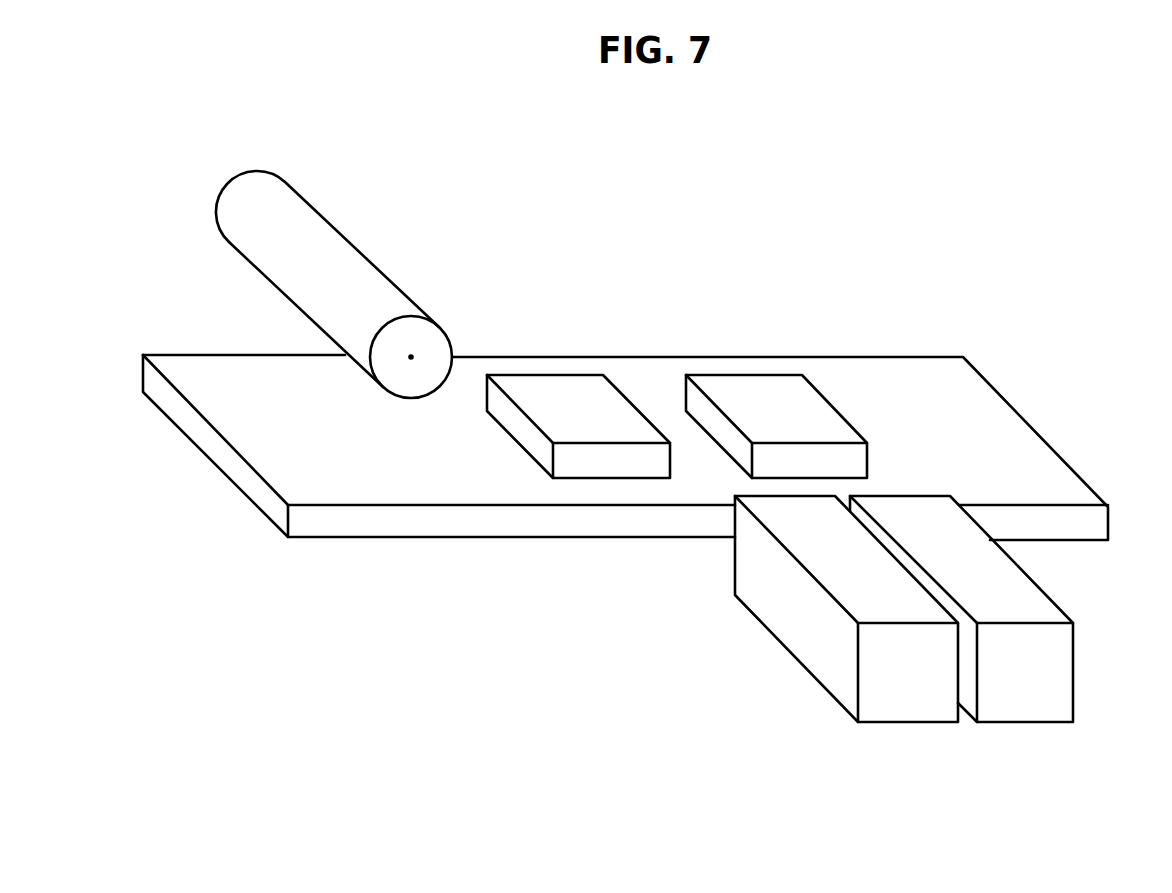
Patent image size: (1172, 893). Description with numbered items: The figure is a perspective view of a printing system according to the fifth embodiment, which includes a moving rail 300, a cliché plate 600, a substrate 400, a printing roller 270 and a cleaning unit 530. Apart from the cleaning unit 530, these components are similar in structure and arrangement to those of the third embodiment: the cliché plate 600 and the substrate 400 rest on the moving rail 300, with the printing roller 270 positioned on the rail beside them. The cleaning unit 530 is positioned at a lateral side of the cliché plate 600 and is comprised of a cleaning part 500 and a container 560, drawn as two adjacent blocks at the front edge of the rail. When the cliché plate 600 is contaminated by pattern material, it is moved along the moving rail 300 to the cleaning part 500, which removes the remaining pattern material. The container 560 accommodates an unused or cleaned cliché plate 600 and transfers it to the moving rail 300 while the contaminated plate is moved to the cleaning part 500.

The printing roller 270 is at (288, 203).
The moving rail 300 is at (1010, 430).
The substrate 400 is at (757, 387).
The cliché plate 600 is at (568, 387).
The cleaning part 500 is at (925, 703).
The container 560 is at (930, 803).
The cleaning unit 530 is at (904, 672).